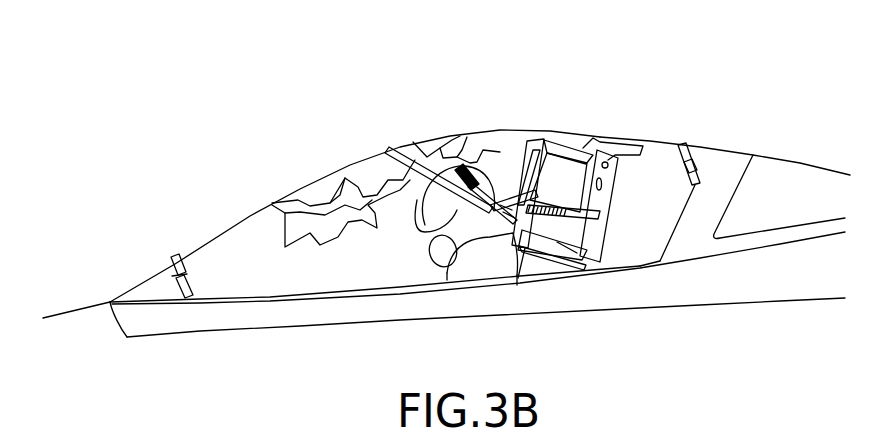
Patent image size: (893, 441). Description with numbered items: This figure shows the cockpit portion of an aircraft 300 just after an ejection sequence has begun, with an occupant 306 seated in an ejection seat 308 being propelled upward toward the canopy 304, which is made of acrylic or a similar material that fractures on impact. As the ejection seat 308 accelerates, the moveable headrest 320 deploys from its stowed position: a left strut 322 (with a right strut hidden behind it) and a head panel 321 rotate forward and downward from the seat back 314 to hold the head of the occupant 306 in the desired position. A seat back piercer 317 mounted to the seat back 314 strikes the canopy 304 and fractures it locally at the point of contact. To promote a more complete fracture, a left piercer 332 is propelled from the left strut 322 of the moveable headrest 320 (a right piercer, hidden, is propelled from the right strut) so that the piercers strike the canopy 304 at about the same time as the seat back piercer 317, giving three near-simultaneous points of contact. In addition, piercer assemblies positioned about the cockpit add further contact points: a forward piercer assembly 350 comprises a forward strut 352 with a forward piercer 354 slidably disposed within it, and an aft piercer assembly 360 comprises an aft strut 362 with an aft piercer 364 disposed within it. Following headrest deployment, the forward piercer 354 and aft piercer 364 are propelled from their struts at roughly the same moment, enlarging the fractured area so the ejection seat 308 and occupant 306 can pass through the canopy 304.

The aircraft 300 is at (124, 166).
The canopy 304 is at (222, 232).
The occupant 306 is at (475, 257).
The ejection seat 308 is at (577, 236).
The seat back 314 is at (572, 232).
The seat back piercer 317 is at (574, 140).
The moveable headrest 320 is at (513, 196).
The head panel 321 is at (498, 145).
The left strut 322 is at (440, 185).
The left piercer 332 is at (388, 150).
The forward piercer assembly 350 is at (205, 305).
The forward strut 352 is at (177, 296).
The forward piercer 354 is at (176, 257).
The aft piercer assembly 360 is at (765, 123).
The aft strut 362 is at (698, 163).
The aft piercer 364 is at (682, 143).